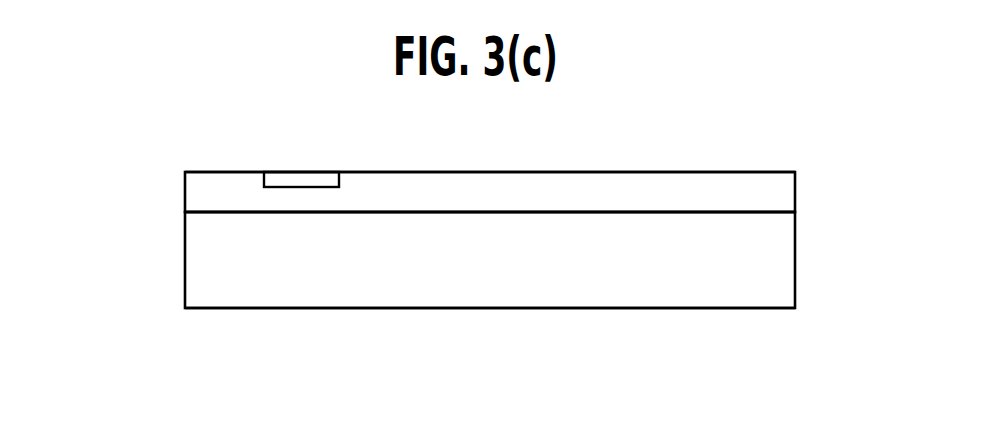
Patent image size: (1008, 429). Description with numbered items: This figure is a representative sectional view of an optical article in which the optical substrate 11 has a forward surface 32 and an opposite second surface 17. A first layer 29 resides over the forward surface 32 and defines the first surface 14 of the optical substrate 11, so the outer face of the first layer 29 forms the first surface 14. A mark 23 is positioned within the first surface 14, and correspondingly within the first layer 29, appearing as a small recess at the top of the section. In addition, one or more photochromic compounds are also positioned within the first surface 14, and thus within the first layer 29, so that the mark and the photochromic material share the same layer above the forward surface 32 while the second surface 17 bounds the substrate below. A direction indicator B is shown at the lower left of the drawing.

The optical substrate 11 is at (782, 258).
The first surface 14 is at (555, 172).
The second surface 17 is at (618, 308).
The mark 23 is at (287, 181).
The first layer 29 is at (785, 190).
The forward surface 32 is at (493, 209).
The direction arrow B is at (64, 342).